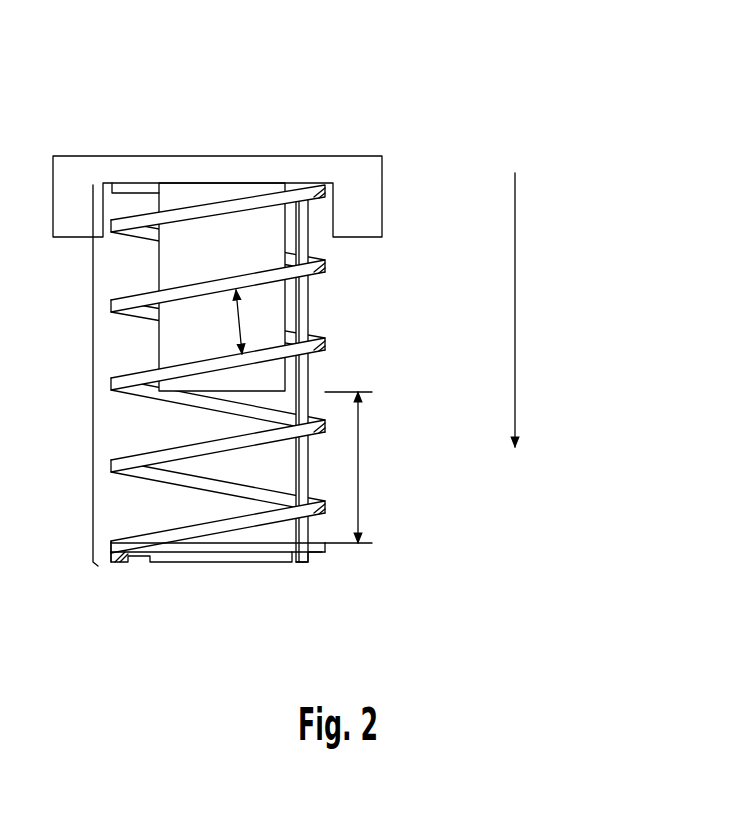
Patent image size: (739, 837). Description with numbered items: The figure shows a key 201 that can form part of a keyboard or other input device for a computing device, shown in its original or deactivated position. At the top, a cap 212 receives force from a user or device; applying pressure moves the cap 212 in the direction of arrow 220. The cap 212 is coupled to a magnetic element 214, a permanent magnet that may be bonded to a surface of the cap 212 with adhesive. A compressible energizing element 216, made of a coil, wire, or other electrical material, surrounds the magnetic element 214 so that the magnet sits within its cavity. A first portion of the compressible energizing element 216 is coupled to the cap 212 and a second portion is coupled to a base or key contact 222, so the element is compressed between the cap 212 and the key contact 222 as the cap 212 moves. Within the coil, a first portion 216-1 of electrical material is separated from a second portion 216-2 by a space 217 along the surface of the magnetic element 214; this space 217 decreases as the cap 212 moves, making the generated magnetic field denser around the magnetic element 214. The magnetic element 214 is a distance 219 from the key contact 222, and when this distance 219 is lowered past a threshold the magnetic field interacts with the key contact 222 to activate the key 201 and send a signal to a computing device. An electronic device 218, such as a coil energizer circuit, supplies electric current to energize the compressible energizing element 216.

The key 201 is at (320, 326).
The cap 212 is at (382, 202).
The magnetic element 214 is at (300, 309).
The compressible energizing element 216 is at (252, 372).
The first portion 216-1 is at (327, 265).
The second portion 216-2 is at (327, 347).
The space 217 is at (238, 322).
The electronic device 218 is at (300, 562).
The distance 219 is at (360, 458).
The arrow 220 is at (518, 300).
The key contact 222 is at (223, 562).